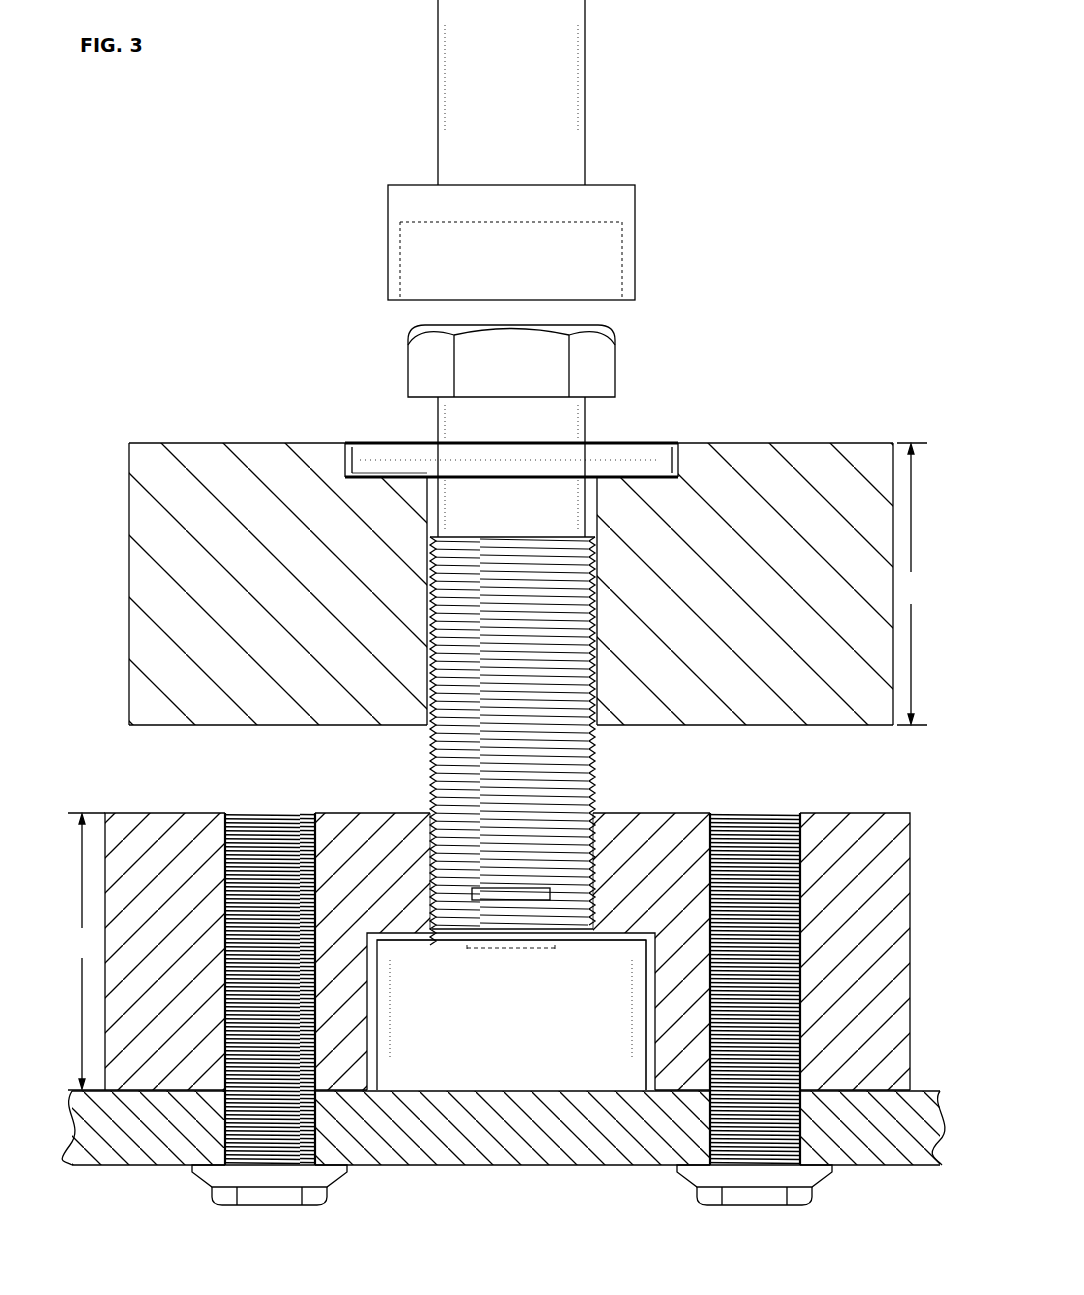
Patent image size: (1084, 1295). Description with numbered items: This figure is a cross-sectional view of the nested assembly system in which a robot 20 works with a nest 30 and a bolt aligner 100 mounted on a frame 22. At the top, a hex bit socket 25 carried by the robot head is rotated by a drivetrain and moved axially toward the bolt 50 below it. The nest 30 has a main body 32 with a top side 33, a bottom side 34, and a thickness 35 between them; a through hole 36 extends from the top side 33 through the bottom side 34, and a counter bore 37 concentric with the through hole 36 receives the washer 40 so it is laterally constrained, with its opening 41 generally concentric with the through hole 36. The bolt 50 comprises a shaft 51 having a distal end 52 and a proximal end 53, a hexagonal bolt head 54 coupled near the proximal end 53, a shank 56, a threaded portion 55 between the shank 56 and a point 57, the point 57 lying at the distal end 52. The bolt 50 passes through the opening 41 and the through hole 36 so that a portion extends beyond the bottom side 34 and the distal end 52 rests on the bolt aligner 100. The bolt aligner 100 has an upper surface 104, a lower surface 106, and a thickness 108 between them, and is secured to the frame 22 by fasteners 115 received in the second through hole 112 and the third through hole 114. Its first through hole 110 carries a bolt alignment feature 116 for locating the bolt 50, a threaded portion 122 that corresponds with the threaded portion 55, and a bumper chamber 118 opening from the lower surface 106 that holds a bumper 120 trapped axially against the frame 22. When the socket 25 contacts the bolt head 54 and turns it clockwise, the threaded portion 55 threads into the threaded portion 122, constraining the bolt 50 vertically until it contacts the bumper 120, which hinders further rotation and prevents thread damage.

The robot 20 is at (403, 82).
The hex bit socket 25 is at (635, 237).
The nest 30 is at (145, 403).
The main body 32 is at (128, 545).
The top side 33 is at (258, 442).
The bottom side 34 is at (188, 726).
The thickness 35 is at (912, 584).
The through hole 36 is at (580, 625).
The counter bore 37 is at (368, 478).
The washer 40 is at (668, 435).
The opening 41 is at (580, 468).
The bolt 50 is at (634, 392).
The shaft 51 is at (570, 428).
The distal end 52 is at (520, 913).
The proximal end 53 is at (620, 342).
The bolt head 54 is at (410, 360).
The threaded portion 55 is at (430, 685).
The shank 56 is at (445, 428).
The point 57 is at (495, 900).
The bolt aligner 100 is at (112, 766).
The upper surface 104 is at (122, 812).
The lower surface 106 is at (140, 1095).
The thickness 108 is at (84, 951).
The first through hole 110 is at (582, 878).
The second through hole 112 is at (240, 985).
The third through hole 114 is at (800, 975).
The fastener 115 is at (285, 1195).
The bolt alignment feature 116 is at (440, 860).
The bumper chamber 118 is at (650, 1020).
The bumper 120 is at (420, 1070).
The threaded portion 122 is at (448, 890).
The frame 22 is at (930, 1090).